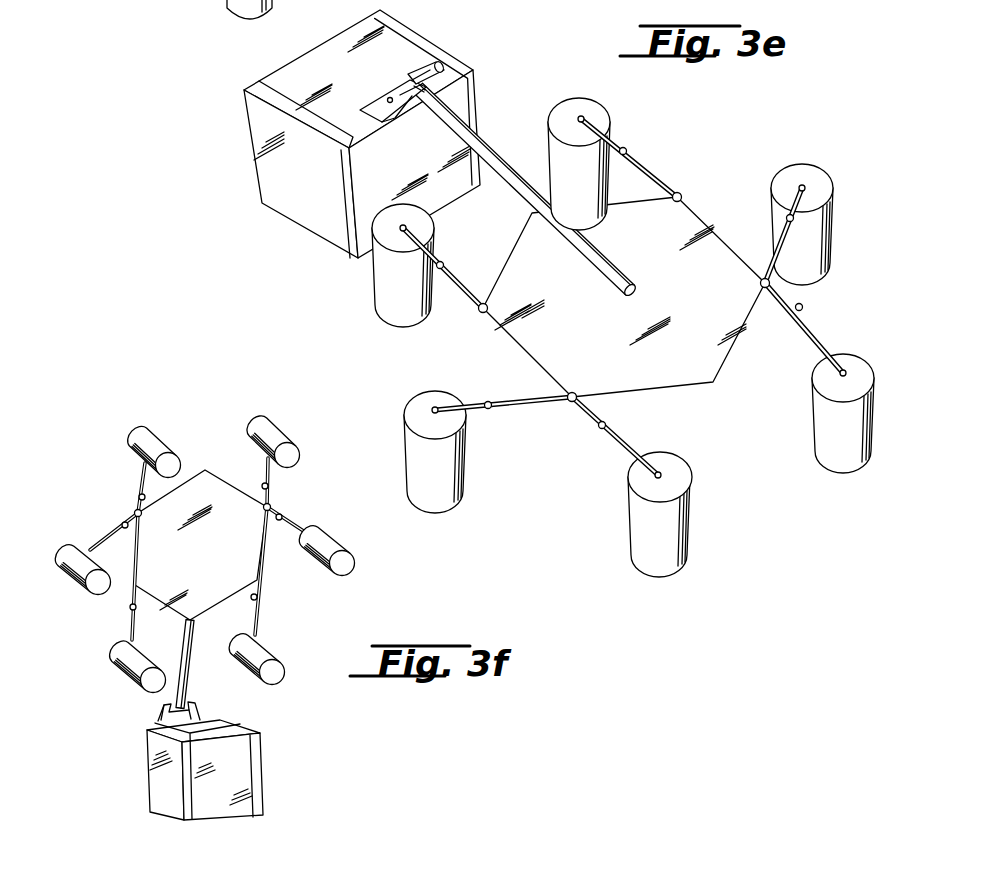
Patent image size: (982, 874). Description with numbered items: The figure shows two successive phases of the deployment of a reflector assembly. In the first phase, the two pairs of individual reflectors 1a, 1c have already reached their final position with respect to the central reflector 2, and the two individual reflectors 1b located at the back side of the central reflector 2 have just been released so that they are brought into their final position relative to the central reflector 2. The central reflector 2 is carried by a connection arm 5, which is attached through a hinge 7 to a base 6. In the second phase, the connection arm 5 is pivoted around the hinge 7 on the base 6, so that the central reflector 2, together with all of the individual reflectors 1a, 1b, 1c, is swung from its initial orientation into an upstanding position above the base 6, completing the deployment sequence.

In FIG. 3E, the individual reflectors 1a is at (600, 122).
In FIG. 3F, the individual reflectors 1a is at (123, 670).
In FIG. 3E, the individual reflectors 1b is at (832, 428).
In FIG. 3F, the individual reflectors 1b is at (158, 450).
In FIG. 3E, the individual reflectors 1c is at (818, 187).
In FIG. 3F, the individual reflectors 1c is at (317, 532).
In FIG. 3E, the central reflector 2 is at (685, 227).
In FIG. 3F, the central reflector 2 is at (170, 502).
In FIG. 3E, the connection arm 5 is at (500, 158).
In FIG. 3F, the connection arm 5 is at (188, 665).
In FIG. 3E, the base 6 is at (268, 173).
In FIG. 3F, the base 6 is at (257, 775).
In FIG. 3E, the hinge 7 is at (428, 68).
In FIG. 3F, the hinge 7 is at (200, 710).